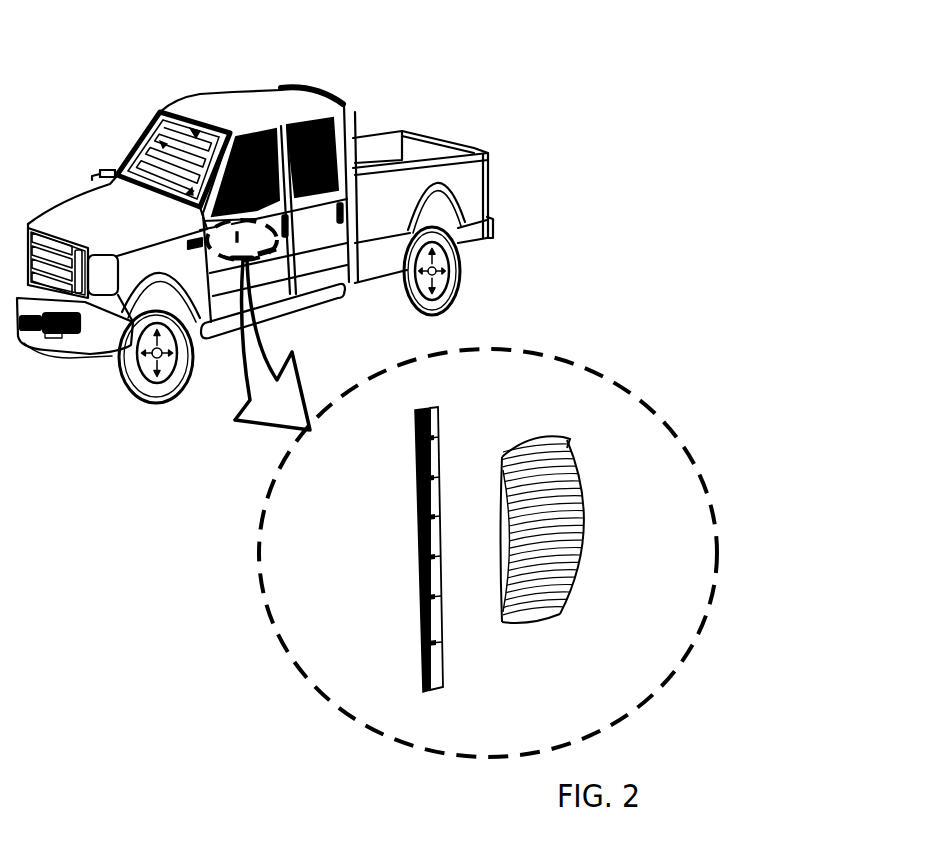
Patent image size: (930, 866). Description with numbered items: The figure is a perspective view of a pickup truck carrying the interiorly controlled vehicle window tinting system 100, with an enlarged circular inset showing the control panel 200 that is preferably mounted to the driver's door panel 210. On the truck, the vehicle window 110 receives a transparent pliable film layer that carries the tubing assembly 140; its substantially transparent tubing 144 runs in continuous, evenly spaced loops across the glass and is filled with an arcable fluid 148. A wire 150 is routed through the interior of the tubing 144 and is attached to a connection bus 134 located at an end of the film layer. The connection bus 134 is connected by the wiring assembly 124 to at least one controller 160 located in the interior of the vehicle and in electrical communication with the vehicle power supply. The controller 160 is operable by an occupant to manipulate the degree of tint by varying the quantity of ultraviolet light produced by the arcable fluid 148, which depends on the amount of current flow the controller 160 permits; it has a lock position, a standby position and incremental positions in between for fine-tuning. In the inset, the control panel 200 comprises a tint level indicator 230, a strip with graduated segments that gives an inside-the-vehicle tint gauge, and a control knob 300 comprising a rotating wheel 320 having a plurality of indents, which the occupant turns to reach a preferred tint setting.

The interiorly controlled vehicle window tinting system 100 is at (512, 115).
The vehicle window 110 is at (253, 132).
The wiring assembly 124 is at (258, 247).
The connection bus 134 is at (108, 172).
The tubing assembly 140 is at (160, 114).
The tubing 144 is at (143, 140).
The arcable fluid 148 is at (192, 126).
The wire 150 is at (155, 136).
The controller 160 is at (584, 529).
The driver's control panel 200 is at (259, 237).
The driver's door panel 210 is at (266, 268).
The tint level indicator 230 is at (440, 427).
The control knob 300 is at (560, 488).
The rotating wheel 320 is at (558, 594).